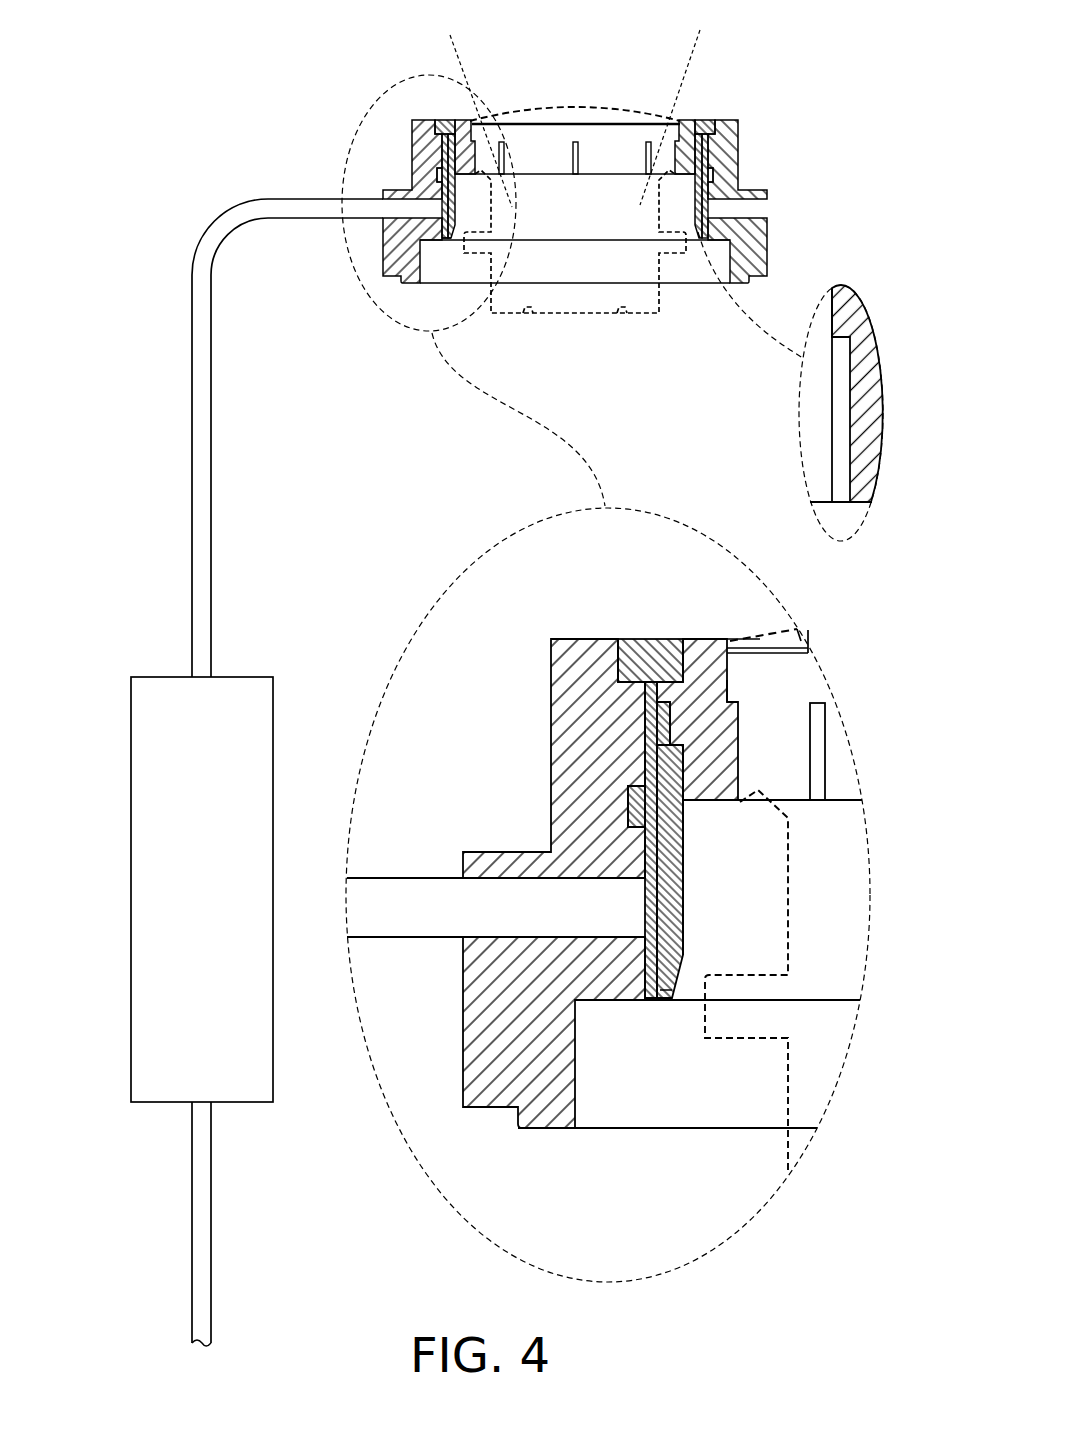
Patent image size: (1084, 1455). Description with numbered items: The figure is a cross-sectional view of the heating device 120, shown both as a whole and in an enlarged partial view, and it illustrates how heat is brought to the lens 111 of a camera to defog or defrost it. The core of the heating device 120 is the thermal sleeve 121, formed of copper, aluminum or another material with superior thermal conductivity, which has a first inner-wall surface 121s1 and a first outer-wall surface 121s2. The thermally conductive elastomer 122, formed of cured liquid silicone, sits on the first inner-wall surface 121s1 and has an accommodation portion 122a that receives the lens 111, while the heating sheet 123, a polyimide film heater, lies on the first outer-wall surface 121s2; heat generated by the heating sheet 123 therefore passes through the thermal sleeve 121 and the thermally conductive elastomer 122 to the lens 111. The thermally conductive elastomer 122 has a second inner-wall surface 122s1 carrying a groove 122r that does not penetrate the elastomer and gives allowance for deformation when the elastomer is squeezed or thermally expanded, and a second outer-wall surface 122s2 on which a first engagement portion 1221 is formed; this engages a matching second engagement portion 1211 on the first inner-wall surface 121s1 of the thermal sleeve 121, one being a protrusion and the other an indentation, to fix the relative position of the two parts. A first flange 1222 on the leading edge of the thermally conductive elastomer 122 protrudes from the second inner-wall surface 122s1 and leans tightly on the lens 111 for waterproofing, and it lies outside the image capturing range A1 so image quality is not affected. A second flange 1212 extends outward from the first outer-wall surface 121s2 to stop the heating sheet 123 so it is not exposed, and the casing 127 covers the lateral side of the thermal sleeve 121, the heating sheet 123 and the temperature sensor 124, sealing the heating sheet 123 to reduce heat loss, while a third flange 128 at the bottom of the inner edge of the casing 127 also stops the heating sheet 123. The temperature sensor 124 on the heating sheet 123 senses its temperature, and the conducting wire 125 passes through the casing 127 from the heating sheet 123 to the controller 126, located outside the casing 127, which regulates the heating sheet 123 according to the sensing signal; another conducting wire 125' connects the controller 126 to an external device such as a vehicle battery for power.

The heating device 120 is at (358, 90).
The image capturing range A1 is at (700, 48).
The lens 111 is at (574, 107).
The thermal sleeve 121 is at (708, 193).
The second engagement portion 1211 is at (688, 690).
The second flange 1212 is at (660, 675).
The first inner-wall surface 121s1 is at (697, 190).
The first outer-wall surface 121s2 is at (722, 172).
The thermally conductive elastomer 122 is at (686, 121).
The first engagement portion 1221 is at (660, 733).
The first flange 1222 is at (730, 646).
The accommodation portion 122a is at (763, 648).
The groove 122r is at (840, 393).
The second inner-wall surface 122s1 is at (833, 315).
The second outer-wall surface 122s2 is at (690, 672).
The heating sheet 123 is at (648, 762).
The temperature sensor 124 is at (630, 802).
The conducting wire 125 is at (374, 587).
The conducting wire 125' is at (157, 1224).
The controller 126 is at (147, 908).
The casing 127 is at (480, 1038).
The third flange 128 is at (653, 985).